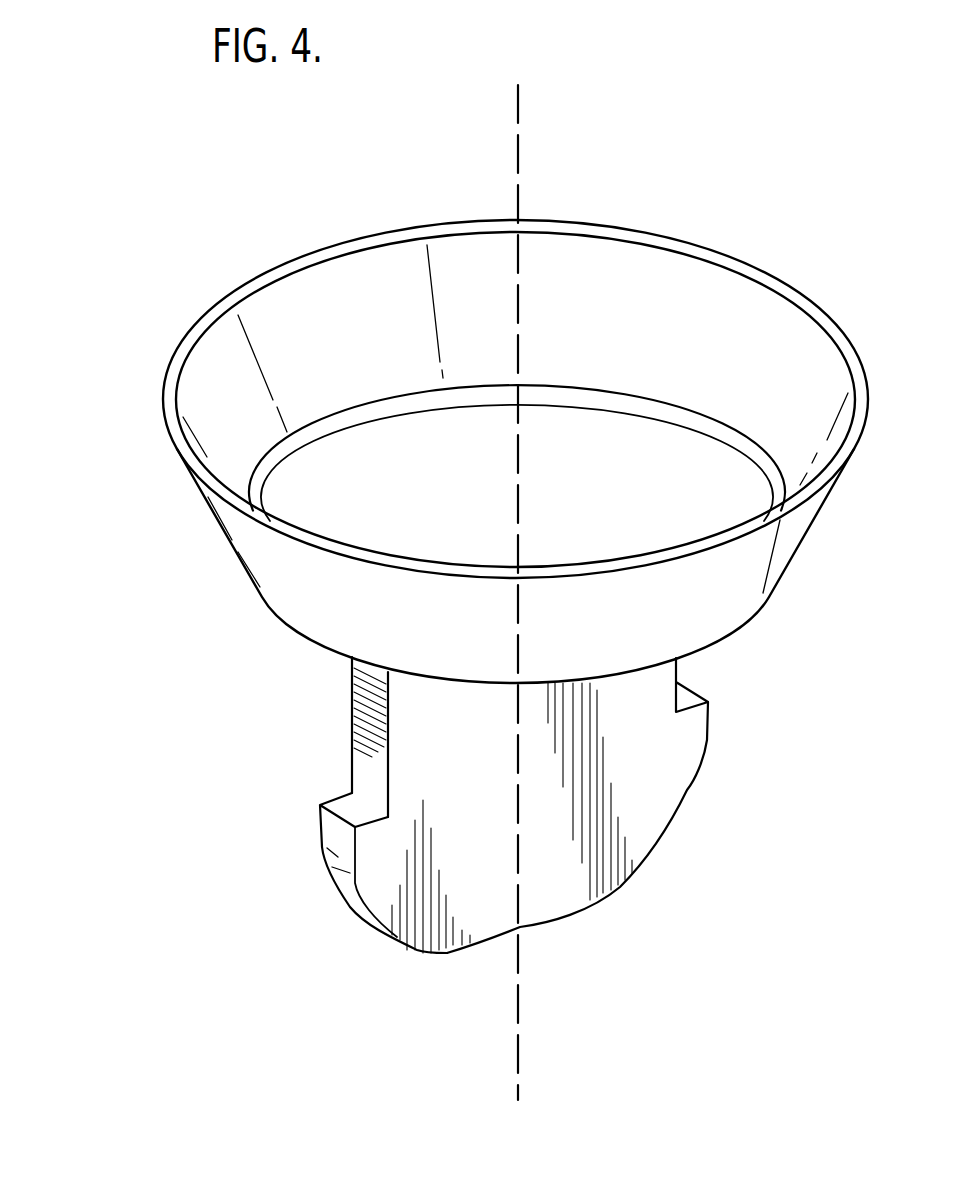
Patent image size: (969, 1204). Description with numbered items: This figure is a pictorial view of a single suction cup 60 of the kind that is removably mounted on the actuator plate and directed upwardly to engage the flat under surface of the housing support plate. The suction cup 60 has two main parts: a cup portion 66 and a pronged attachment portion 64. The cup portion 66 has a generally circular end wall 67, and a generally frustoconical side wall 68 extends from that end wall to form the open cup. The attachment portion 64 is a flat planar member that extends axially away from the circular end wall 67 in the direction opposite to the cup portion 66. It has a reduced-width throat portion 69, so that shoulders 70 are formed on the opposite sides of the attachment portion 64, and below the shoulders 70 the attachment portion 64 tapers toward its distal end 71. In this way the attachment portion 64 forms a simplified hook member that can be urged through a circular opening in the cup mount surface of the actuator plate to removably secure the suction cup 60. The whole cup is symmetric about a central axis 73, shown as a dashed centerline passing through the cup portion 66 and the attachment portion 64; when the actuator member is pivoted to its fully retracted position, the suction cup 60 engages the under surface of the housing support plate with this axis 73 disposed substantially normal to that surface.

The suction cup 60 is at (227, 599).
The pronged attachment portion 64 is at (232, 655).
The cup portion 66 is at (98, 592).
The circular end wall 67 is at (715, 517).
The frustoconical side wall 68 is at (660, 270).
The throat portion 69 is at (472, 760).
The shoulders 70 is at (343, 805).
The distal end 71 is at (545, 903).
The axis 73 is at (518, 108).